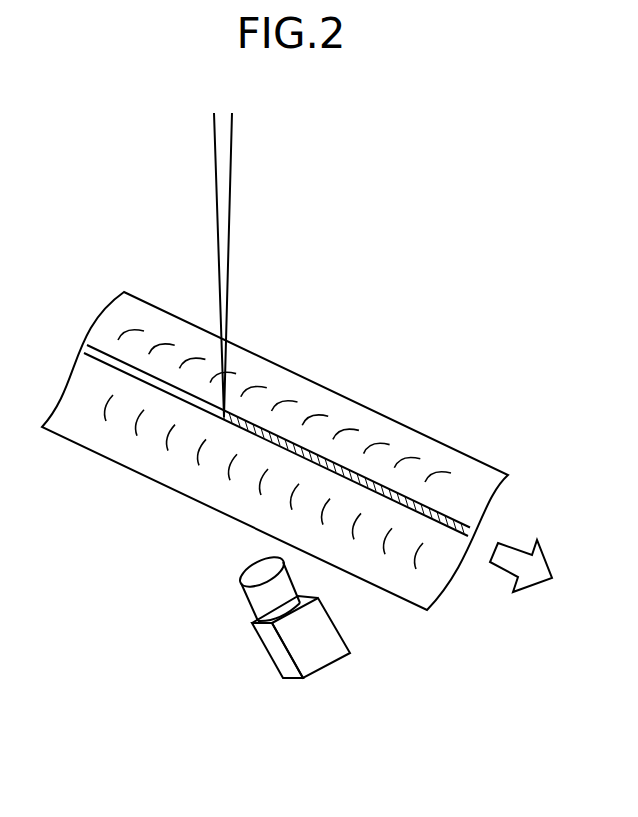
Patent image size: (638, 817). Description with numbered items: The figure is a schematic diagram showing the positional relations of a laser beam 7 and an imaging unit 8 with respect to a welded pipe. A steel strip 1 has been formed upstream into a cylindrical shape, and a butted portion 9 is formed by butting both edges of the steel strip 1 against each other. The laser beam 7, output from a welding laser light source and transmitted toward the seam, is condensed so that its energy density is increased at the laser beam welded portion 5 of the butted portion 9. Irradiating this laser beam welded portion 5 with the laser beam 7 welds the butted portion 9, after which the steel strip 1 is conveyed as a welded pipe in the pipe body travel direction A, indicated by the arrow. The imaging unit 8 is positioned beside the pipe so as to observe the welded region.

The steel strip 1 is at (448, 460).
The laser beam welded portion 5 is at (220, 420).
The laser beam 7 is at (230, 198).
The imaging unit 8 is at (265, 653).
The butted portion 9 is at (112, 362).
The pipe body travel direction A is at (495, 565).